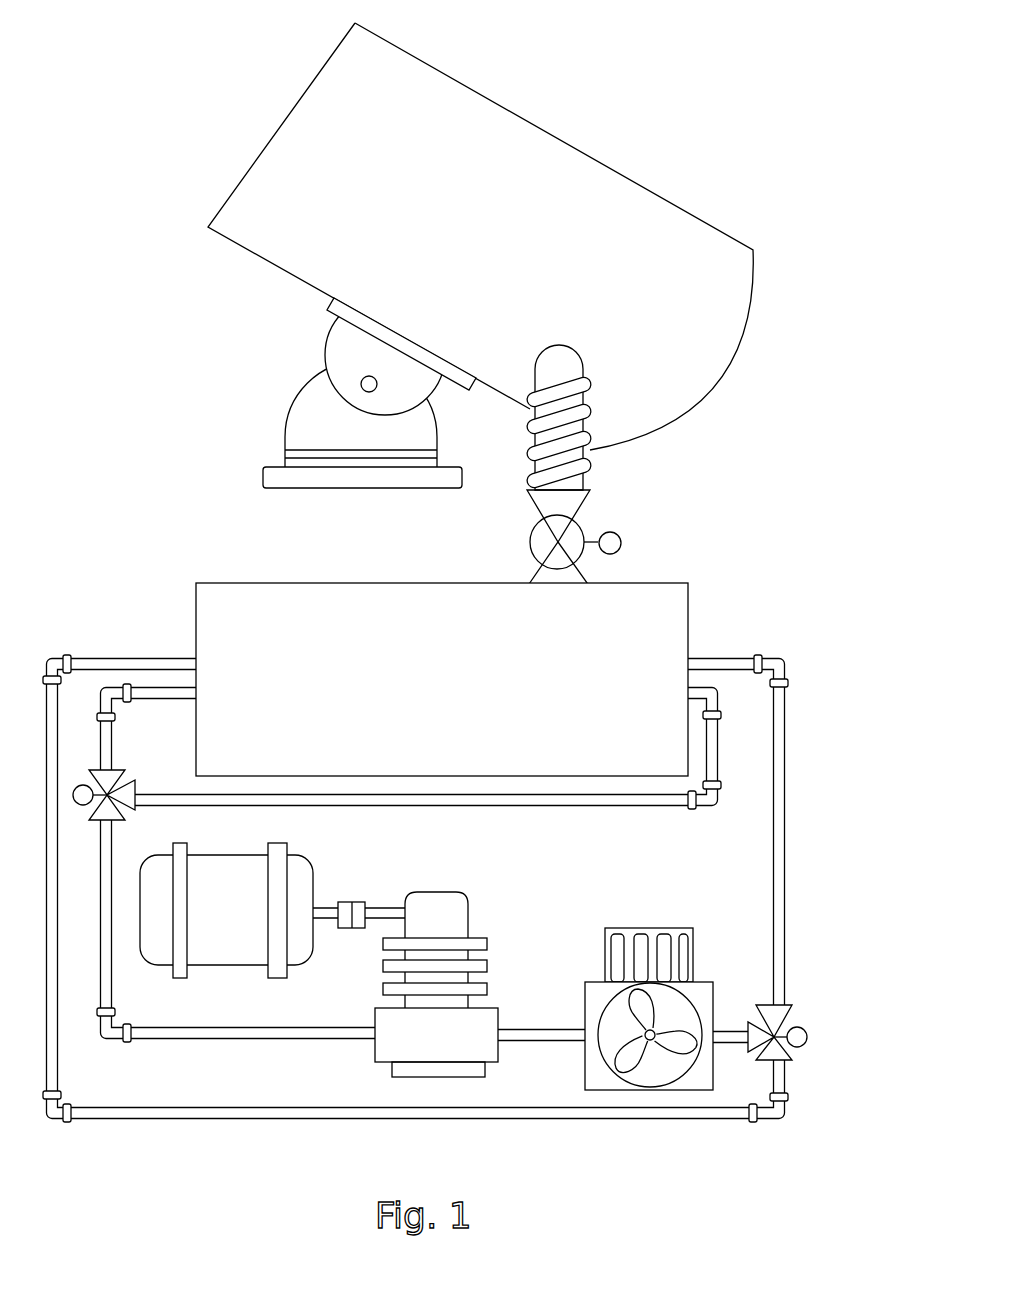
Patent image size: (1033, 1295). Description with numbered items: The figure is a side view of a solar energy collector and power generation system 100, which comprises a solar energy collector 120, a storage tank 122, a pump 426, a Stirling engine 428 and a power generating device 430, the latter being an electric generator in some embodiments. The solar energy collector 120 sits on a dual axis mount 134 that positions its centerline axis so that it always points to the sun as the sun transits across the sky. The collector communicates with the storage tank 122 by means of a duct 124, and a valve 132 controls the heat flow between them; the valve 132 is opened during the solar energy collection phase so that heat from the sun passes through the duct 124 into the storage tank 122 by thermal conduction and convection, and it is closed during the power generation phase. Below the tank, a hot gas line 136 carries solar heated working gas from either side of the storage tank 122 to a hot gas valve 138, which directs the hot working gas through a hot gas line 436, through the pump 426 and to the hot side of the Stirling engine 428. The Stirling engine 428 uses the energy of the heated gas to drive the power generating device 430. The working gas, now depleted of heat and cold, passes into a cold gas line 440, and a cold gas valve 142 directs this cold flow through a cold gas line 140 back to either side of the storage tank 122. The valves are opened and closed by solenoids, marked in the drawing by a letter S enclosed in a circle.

The solar energy collector and power generation system 100 is at (607, 123).
The solar energy collector 120 is at (260, 273).
The storage tank 122 is at (198, 560).
The duct 124 is at (523, 448).
The valve 132 is at (600, 498).
The dual axis mount 134 is at (273, 415).
The hot gas line 136 is at (160, 640).
The hot gas valve 138 is at (788, 992).
The cold gas line 140 is at (122, 733).
The cold gas valve 142 is at (123, 765).
The pump 426 is at (635, 923).
The Stirling engine 428 is at (442, 878).
The power generating device 430 is at (310, 847).
The hot gas line 436 is at (515, 1022).
The cold gas line 440 is at (235, 1047).